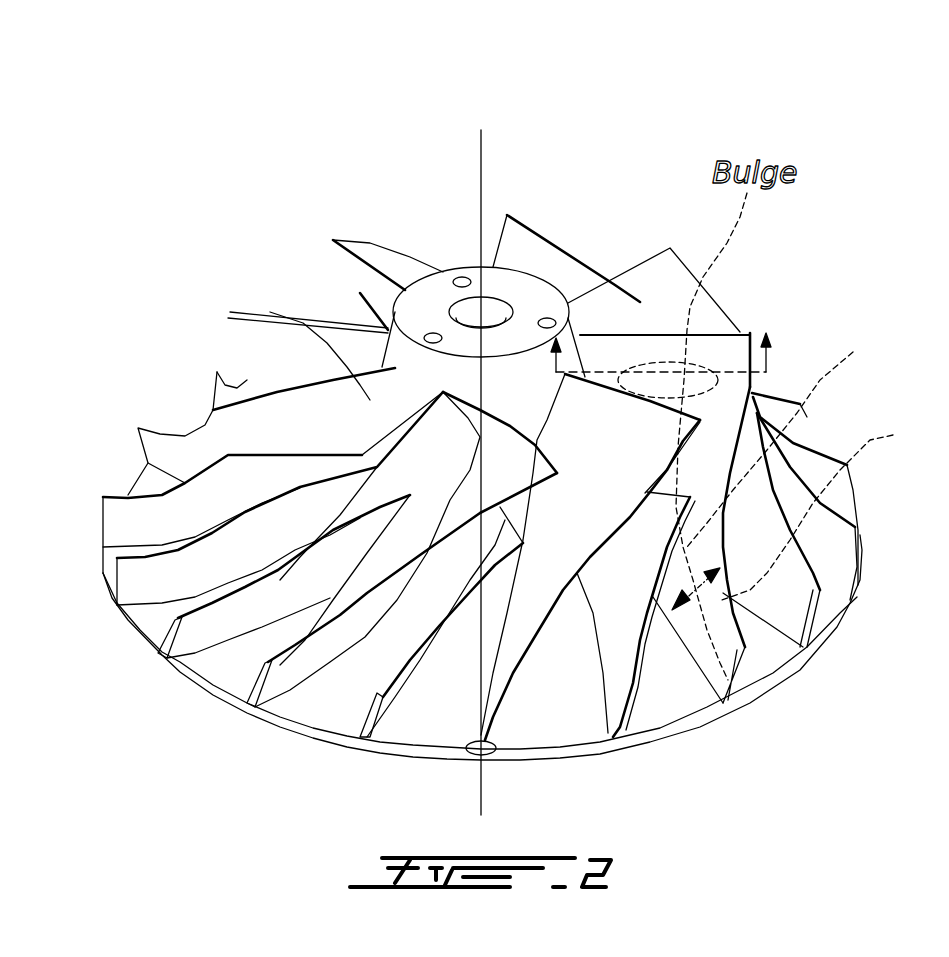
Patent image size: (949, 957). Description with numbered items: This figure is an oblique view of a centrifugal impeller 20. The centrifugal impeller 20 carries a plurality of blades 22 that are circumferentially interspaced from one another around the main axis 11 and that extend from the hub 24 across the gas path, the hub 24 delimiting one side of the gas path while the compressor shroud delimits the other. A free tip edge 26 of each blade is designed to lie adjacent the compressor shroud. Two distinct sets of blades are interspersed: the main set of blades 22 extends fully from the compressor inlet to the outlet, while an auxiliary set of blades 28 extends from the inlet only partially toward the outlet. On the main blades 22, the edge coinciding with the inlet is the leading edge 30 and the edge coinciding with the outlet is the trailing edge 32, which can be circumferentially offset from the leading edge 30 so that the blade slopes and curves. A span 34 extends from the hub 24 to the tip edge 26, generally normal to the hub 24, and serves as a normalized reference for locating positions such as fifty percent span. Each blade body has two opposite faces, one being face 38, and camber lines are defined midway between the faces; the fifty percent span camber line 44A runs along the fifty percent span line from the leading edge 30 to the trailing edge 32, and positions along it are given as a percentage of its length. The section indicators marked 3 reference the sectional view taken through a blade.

The centrifugal impeller 20 is at (663, 192).
The main axis 11 is at (481, 153).
The blades 22 is at (273, 422).
The hub 24 is at (848, 530).
The tip edge 26 is at (805, 425).
The second plurality of blades 28 is at (285, 328).
The leading edge 30 is at (647, 474).
The trailing edge 32 is at (837, 630).
The span 34 is at (826, 511).
The face 38 is at (659, 252).
The 50% span camber line 44A is at (784, 436).
The section line 3- 3 is at (659, 368).